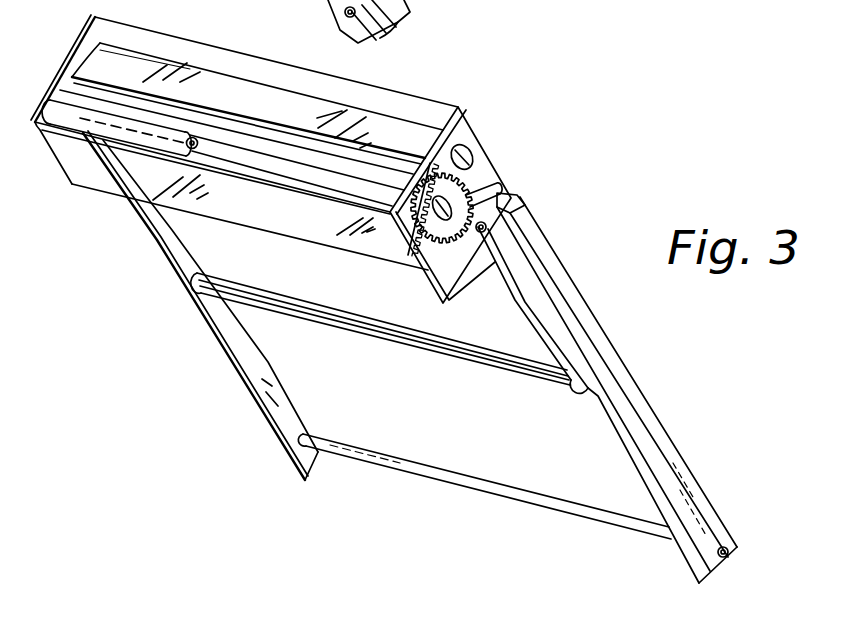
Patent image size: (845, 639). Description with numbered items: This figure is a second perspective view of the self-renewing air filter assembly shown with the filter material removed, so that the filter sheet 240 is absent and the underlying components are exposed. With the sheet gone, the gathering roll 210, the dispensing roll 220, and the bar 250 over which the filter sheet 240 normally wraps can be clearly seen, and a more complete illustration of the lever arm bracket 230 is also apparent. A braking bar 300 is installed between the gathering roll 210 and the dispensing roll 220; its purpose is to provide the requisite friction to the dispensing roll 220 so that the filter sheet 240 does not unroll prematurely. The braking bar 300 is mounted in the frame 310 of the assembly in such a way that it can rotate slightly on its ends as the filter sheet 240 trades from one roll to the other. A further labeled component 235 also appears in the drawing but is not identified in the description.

The dispensing roll 220 is at (402, 127).
The braking bar 300 is at (72, 88).
The gathering roll 210 is at (230, 163).
The lever arm bracket 230 is at (412, 338).
The bar 250 is at (533, 497).
The frame 310 is at (542, 230).
The filter sheet 240 is at (432, 21).
The rack 235 is at (343, 13).